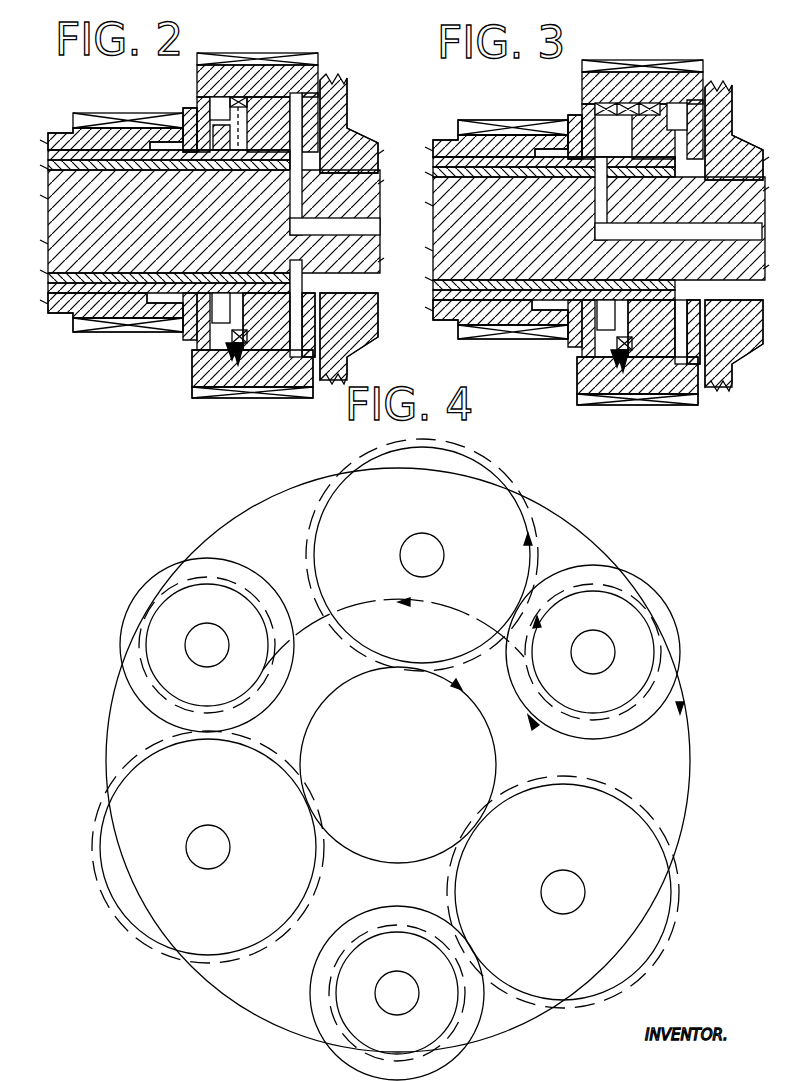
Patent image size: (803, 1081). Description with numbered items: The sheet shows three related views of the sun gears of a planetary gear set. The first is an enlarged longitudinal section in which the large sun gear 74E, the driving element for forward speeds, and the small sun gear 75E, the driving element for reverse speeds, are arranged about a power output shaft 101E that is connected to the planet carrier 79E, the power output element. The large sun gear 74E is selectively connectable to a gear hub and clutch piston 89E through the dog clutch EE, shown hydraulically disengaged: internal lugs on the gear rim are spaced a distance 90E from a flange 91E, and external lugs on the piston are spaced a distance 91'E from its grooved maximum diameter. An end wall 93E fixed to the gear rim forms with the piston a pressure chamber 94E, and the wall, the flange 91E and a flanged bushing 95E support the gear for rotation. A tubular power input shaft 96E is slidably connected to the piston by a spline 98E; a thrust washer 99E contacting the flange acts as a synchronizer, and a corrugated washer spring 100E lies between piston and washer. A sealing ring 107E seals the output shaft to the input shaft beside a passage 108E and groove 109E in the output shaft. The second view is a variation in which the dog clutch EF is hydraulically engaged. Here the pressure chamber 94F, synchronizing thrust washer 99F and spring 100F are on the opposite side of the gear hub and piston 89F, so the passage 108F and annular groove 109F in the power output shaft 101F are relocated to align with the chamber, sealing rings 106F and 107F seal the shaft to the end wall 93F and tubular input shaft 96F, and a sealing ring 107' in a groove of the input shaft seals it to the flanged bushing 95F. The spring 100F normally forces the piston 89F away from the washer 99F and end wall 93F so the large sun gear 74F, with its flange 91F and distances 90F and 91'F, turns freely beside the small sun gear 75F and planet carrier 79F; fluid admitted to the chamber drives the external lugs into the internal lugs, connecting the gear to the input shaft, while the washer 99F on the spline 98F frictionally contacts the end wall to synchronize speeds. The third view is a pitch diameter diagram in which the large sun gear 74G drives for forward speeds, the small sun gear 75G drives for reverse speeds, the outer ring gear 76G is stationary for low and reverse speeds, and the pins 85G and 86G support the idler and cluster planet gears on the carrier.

In FIG. 2, the large sun gear 74E is at (237, 355).
In FIG. 2, the small sun gear 75E is at (115, 318).
In FIG. 2, the planet carrier 79E is at (330, 362).
In FIG. 2, the gear hub and clutch piston 89E is at (237, 357).
In FIG. 2, the distance 90E is at (220, 97).
In FIG. 2, the flange 91E is at (188, 305).
In FIG. 2, the distance 91'E is at (284, 63).
In FIG. 2, the end wall 93E is at (336, 355).
In FIG. 2, the pressure chamber 94E is at (298, 385).
In FIG. 2, the flanged bushing 95E is at (150, 325).
In FIG. 2, the tubular power input shaft 96E is at (80, 295).
In FIG. 2, the spline 98E is at (262, 325).
In FIG. 2, the thrust washer 99E is at (195, 393).
In FIG. 2, the corrugated washer spring 100E is at (208, 372).
In FIG. 2, the power output shaft 101E is at (207, 267).
In FIG. 2, the sealing ring 107E is at (183, 128).
In FIG. 2, the passage 108E is at (313, 227).
In FIG. 2, the groove 109E is at (291, 182).
In FIG. 2, the dog clutch EE is at (232, 343).
In FIG. 3, the large sun gear 74F is at (637, 446).
In FIG. 3, the small sun gear 75F is at (500, 286).
In FIG. 3, the planet carrier 79F is at (734, 228).
In FIG. 3, the gear hub and piston 89F is at (628, 393).
In FIG. 3, the distance 90F is at (644, 77).
In FIG. 3, the flange 91F is at (609, 378).
In FIG. 3, the distance 91'F is at (661, 70).
In FIG. 3, the end wall 93F is at (739, 348).
In FIG. 3, the pressure chamber 94F is at (611, 367).
In FIG. 3, the flanged bushing 95F is at (513, 338).
In FIG. 3, the tubular input shaft 96F is at (500, 332).
In FIG. 3, the spline 98F is at (679, 306).
In FIG. 3, the synchronizing thrust washer 99F is at (668, 369).
In FIG. 3, the spring 100F is at (675, 402).
In FIG. 3, the power output shaft 101F is at (599, 228).
In FIG. 3, the sealing ring 106F is at (650, 198).
In FIG. 3, the sealing ring 107F is at (507, 122).
In FIG. 3, the sealing ring 107' is at (513, 112).
In FIG. 3, the passage 108F is at (613, 293).
In FIG. 3, the annular groove 109F is at (554, 185).
In FIG. 3, the dog clutch EF is at (618, 410).
In FIG. 4, the large sun gear 74G is at (558, 750).
In FIG. 4, the small sun gear 75G is at (493, 738).
In FIG. 4, the outer ring gear 76G is at (685, 765).
In FIG. 4, the pin 85G is at (385, 723).
In FIG. 4, the pin 86G is at (400, 819).